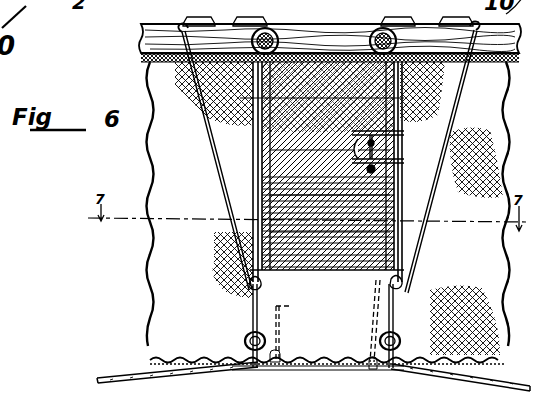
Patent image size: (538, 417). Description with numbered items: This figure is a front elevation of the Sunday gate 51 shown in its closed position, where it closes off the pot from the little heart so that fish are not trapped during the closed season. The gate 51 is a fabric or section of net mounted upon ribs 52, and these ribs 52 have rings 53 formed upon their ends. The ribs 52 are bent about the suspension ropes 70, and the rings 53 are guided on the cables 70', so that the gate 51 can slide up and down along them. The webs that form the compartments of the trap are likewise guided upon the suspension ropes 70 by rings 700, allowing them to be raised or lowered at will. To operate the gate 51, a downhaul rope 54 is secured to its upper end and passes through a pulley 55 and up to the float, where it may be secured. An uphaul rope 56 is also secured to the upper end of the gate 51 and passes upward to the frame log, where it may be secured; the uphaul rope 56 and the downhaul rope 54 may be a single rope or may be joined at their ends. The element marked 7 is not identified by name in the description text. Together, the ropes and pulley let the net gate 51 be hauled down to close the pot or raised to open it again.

The cross bars 7 is at (176, 377).
The gate 51 is at (398, 236).
The ribs 52 is at (402, 180).
The rings 53 is at (236, 216).
The downhaul rope 54 is at (260, 133).
The pulley 55 is at (250, 288).
The uphaul rope 56 is at (370, 40).
The suspension ropes 70 is at (313, 246).
The cables 70' is at (318, 380).
The rings 700 is at (218, 333).